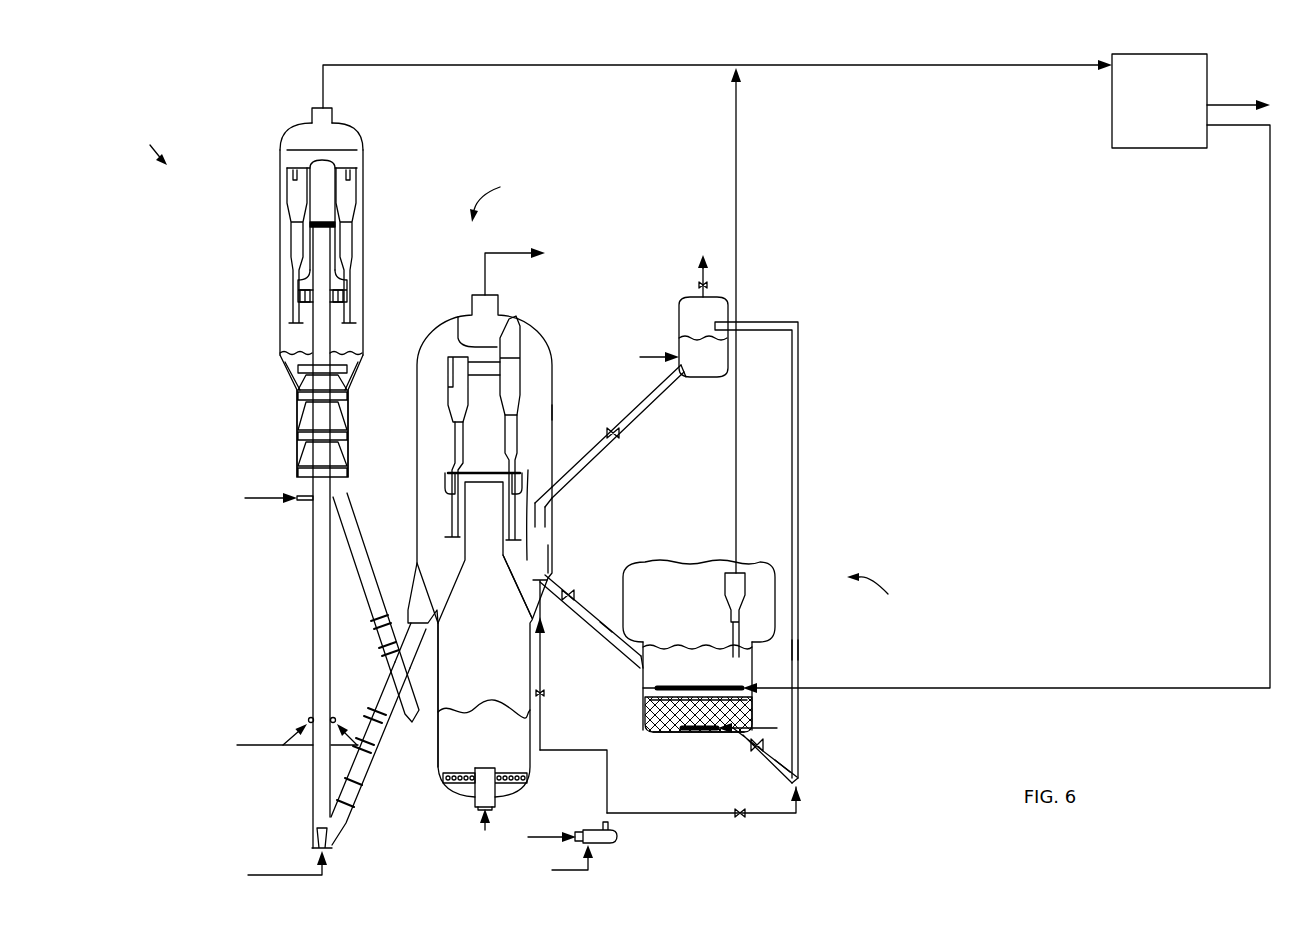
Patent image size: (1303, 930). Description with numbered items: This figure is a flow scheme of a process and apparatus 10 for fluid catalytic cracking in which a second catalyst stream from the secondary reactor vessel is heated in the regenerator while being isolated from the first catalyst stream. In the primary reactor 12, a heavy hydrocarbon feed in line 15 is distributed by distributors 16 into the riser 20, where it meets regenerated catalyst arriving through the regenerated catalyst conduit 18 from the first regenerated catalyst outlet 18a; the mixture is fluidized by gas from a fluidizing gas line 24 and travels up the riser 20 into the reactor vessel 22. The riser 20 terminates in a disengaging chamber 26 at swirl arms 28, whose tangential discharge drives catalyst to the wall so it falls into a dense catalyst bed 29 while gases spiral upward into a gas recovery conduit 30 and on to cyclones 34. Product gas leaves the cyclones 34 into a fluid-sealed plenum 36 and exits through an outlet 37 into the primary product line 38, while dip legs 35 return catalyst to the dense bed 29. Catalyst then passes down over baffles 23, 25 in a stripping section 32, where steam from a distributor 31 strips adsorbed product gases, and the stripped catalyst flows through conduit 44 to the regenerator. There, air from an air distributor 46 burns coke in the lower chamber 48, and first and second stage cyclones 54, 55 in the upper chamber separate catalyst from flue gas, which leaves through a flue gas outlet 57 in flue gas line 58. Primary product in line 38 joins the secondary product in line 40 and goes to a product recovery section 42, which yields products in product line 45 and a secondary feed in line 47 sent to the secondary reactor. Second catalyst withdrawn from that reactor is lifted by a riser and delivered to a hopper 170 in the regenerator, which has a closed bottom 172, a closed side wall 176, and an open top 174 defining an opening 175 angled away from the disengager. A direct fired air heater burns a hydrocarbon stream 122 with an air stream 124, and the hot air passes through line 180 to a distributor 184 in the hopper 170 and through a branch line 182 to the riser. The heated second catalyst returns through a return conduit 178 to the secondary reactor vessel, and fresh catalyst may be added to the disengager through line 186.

The process and apparatus 10 is at (144, 141).
The primary reactor 12 is at (378, 133).
The line 15 is at (264, 748).
The distributors 16 is at (310, 716).
The regenerated catalyst conduit 18 is at (370, 763).
The first regenerated catalyst outlet 18a is at (414, 580).
The riser 20 is at (336, 625).
The reactor vessel 22 is at (365, 272).
The baffles 23 is at (330, 415).
The fluidizing gas line 24 is at (287, 875).
The baffles 25 is at (340, 437).
The disengaging chamber 26 is at (292, 333).
The swirl arms 28 is at (300, 290).
The dense catalyst bed 29 is at (287, 367).
The gas recovery conduit 30 is at (327, 256).
The distributor 31 is at (302, 503).
The stripping section 32 is at (297, 415).
The cyclones 34 is at (290, 196).
The dip leg 35 is at (350, 305).
The fluid-sealed plenum 36 is at (292, 131).
The outlet 37 is at (332, 112).
The primary product line 38 is at (318, 90).
The secondary product line 40 is at (735, 186).
The product recovery section 42 is at (1112, 104).
The spent catalyst conduit 44 is at (352, 545).
The product line 45 is at (1235, 103).
The air distributor 46 is at (513, 775).
The secondary feed line 47 is at (1268, 243).
The lower chamber 48 is at (438, 660).
The first stage separator cyclone 54 is at (447, 400).
The second stage separator cyclone 55 is at (521, 385).
The flue gas outlet 57 is at (496, 307).
The flue gas line 58 is at (480, 275).
The hydrocarbon stream 122 is at (549, 838).
The air stream 124 is at (587, 870).
The hopper 170 is at (545, 545).
The bottom 172 is at (516, 580).
The top 174 is at (529, 480).
The opening 175 is at (549, 501).
The side wall 176 is at (516, 578).
The return conduit 178 is at (582, 610).
The line 180 is at (608, 793).
The branch line 182 is at (730, 813).
The distributor 184 is at (544, 587).
The line 186 is at (658, 362).